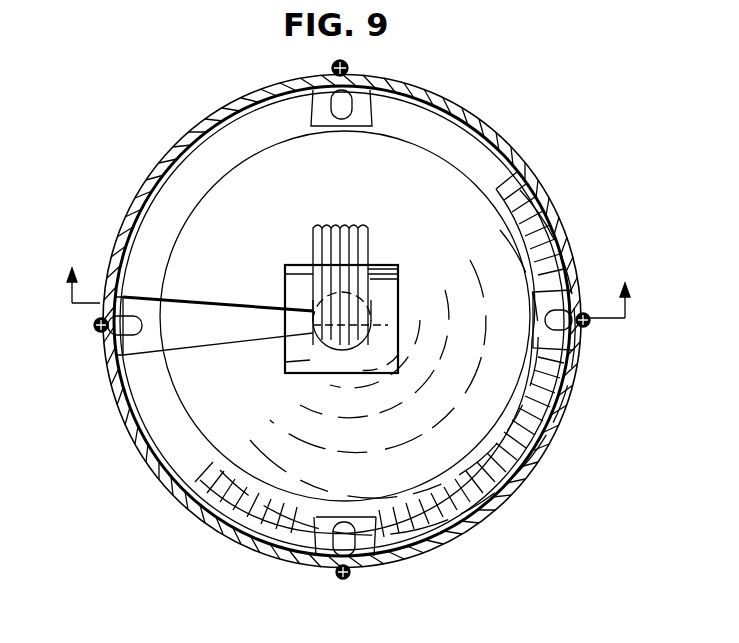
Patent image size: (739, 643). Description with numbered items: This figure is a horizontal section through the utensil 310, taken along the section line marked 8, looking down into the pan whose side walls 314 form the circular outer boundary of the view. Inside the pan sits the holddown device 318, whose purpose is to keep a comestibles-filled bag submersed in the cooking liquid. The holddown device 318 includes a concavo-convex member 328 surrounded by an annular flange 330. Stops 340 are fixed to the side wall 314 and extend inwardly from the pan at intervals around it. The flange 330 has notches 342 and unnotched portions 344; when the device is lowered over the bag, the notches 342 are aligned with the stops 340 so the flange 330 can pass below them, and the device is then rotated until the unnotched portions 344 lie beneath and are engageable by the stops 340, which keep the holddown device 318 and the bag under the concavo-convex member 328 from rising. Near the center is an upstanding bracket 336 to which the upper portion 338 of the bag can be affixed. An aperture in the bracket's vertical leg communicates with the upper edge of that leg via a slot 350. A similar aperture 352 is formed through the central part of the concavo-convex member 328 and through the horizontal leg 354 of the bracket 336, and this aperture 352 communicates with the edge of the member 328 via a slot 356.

The utensil 310 is at (200, 108).
The side walls 314 is at (145, 197).
The holddown device 318 is at (120, 401).
The concavo-convex member 328 is at (322, 428).
The annular flange 330 is at (498, 468).
The upstanding bracket 336 is at (402, 307).
The upper portion of the bag 338 is at (398, 284).
The stops 340 is at (352, 100).
The notches 342 is at (370, 556).
The unnotched portions 344 is at (528, 196).
The slot 350 is at (350, 266).
The aperture 352 is at (351, 351).
The horizontal leg 354 is at (286, 360).
The slot 356 is at (205, 308).
The section line 8 is at (347, 306).